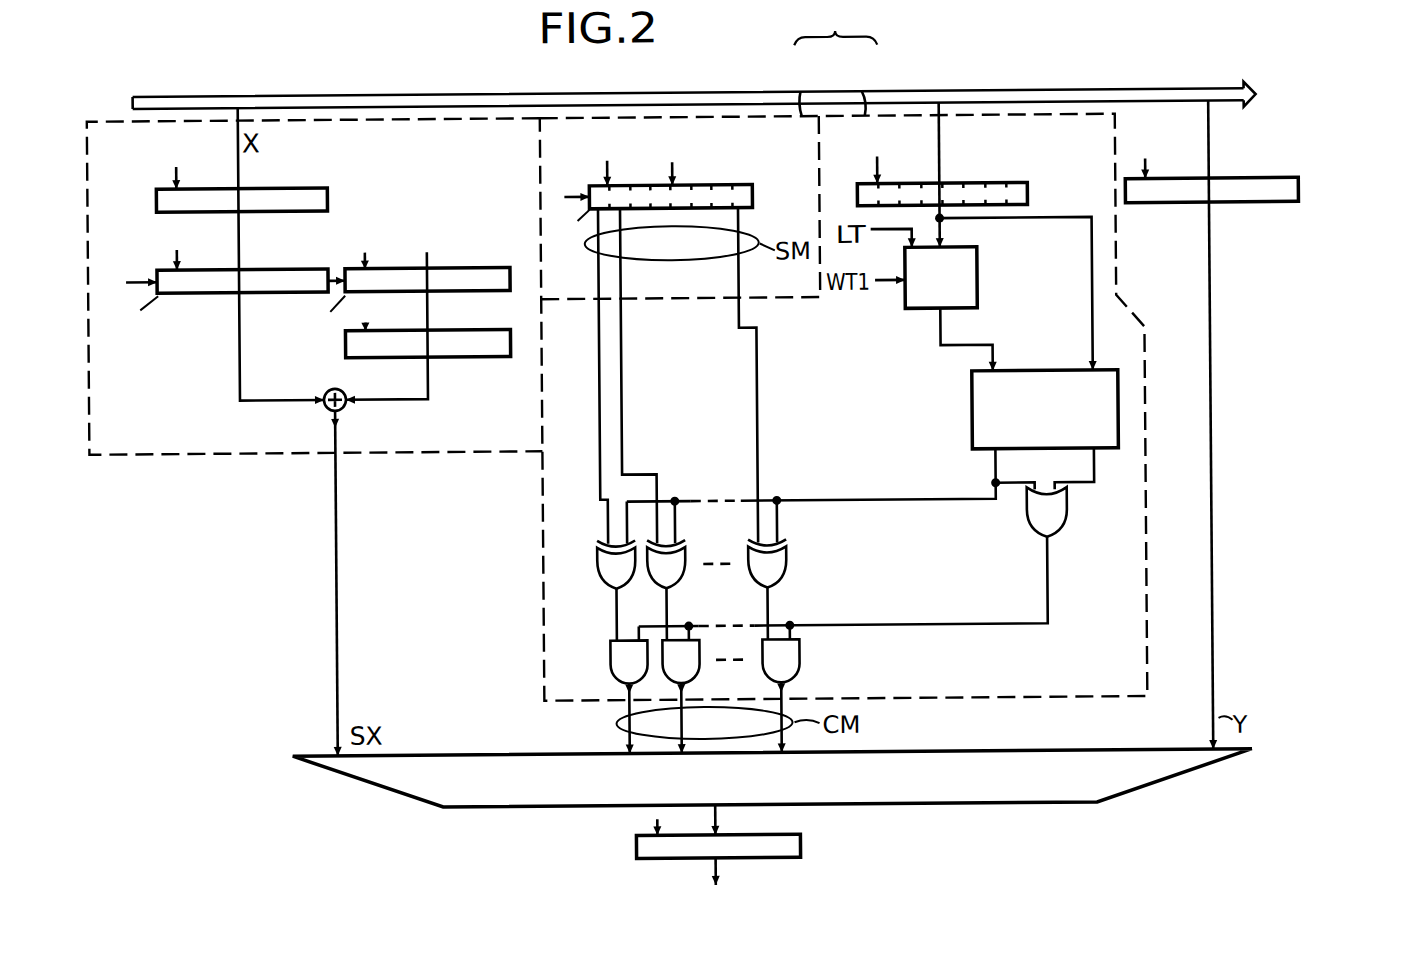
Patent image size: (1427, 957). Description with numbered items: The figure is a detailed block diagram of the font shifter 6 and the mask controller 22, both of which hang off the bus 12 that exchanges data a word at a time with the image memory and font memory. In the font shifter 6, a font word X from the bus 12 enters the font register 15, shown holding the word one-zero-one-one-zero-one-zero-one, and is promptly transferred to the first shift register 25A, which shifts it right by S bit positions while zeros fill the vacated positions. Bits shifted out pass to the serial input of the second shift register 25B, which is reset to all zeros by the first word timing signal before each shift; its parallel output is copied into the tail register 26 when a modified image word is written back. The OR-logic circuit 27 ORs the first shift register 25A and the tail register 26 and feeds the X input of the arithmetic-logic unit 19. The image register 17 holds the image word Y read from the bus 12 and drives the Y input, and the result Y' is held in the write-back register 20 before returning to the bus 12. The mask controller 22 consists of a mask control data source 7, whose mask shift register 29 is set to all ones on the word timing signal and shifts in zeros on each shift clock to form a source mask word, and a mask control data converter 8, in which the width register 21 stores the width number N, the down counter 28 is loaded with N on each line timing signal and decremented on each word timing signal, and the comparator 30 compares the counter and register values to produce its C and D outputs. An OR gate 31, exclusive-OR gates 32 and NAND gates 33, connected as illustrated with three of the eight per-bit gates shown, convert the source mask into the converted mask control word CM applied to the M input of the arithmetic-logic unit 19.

The font shifter 6 is at (204, 450).
The mask control data source 7 is at (803, 92).
The mask control data converter 8 is at (864, 92).
The bus 12 is at (1125, 92).
The font register 15 is at (320, 185).
The image register 17 is at (1282, 183).
The arithmetic-logic unit 19 is at (1147, 779).
The write-back register 20 is at (800, 846).
The width register 21 is at (1019, 185).
The mask controller 22 is at (835, 25).
The first shift register 25A is at (270, 266).
The second shift register 25B is at (448, 266).
The tail register 26 is at (471, 355).
The OR-logic circuit 27 is at (346, 405).
The down counter 28 is at (981, 265).
The mask shift register 29 is at (694, 185).
The comparator 30 is at (972, 420).
The OR gate 31 is at (1067, 518).
The exclusive-OR gates 32 is at (598, 569).
The NAND gates 33 is at (608, 661).